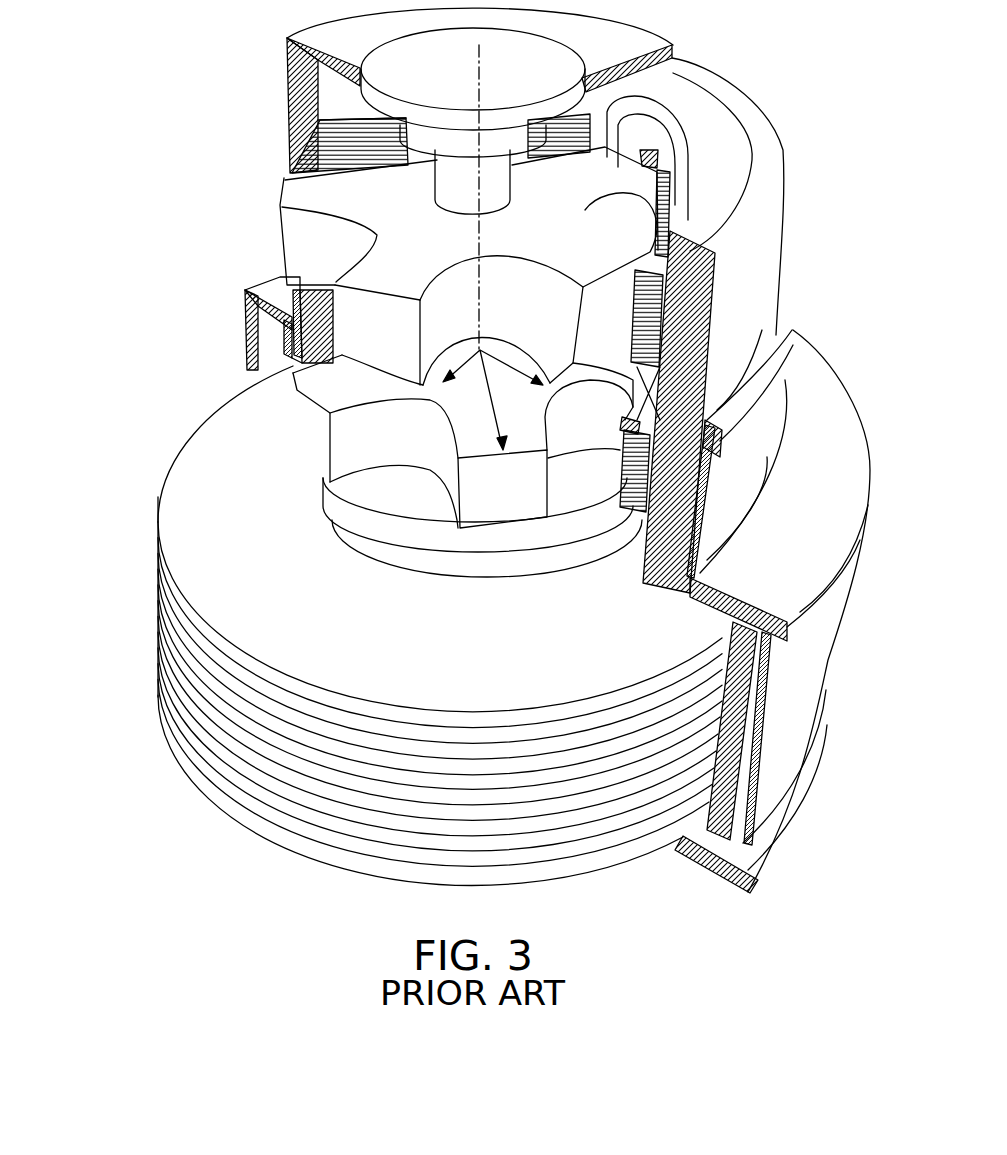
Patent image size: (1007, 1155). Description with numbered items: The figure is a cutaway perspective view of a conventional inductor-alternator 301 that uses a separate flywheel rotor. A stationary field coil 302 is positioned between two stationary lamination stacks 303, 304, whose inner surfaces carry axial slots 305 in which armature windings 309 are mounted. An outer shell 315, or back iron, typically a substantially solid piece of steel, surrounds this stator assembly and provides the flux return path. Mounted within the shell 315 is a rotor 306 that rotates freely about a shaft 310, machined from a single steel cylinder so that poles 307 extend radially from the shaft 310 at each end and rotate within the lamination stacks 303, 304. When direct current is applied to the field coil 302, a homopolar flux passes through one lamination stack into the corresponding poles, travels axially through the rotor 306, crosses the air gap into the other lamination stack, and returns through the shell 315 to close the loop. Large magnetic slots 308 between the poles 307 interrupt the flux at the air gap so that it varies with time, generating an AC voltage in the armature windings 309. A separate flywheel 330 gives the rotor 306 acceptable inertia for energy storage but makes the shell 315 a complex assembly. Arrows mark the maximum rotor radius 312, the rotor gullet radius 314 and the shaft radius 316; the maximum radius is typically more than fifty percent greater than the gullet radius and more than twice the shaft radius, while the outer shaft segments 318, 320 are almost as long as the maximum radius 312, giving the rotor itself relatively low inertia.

The inductor-alternator 301 is at (213, 176).
The stationary field coil 302 is at (620, 440).
The lamination stack 303 is at (640, 262).
The lamination stack 304 is at (630, 435).
The inner surface axial slots 305 is at (693, 72).
The rotor 306 is at (257, 228).
The poles 307 is at (284, 186).
The magnetic slots 308 is at (413, 442).
The armature windings 309 is at (678, 130).
The shaft 310 is at (484, 83).
The maximum radius of rotor 312 is at (496, 424).
The rotor gullet radius 314 is at (513, 362).
The outer shell 315 is at (783, 128).
The radius of shaft 316 is at (442, 354).
The outer shaft segment 318 is at (436, 188).
The outer shaft segment 320 is at (558, 483).
The flywheel 330 is at (158, 496).